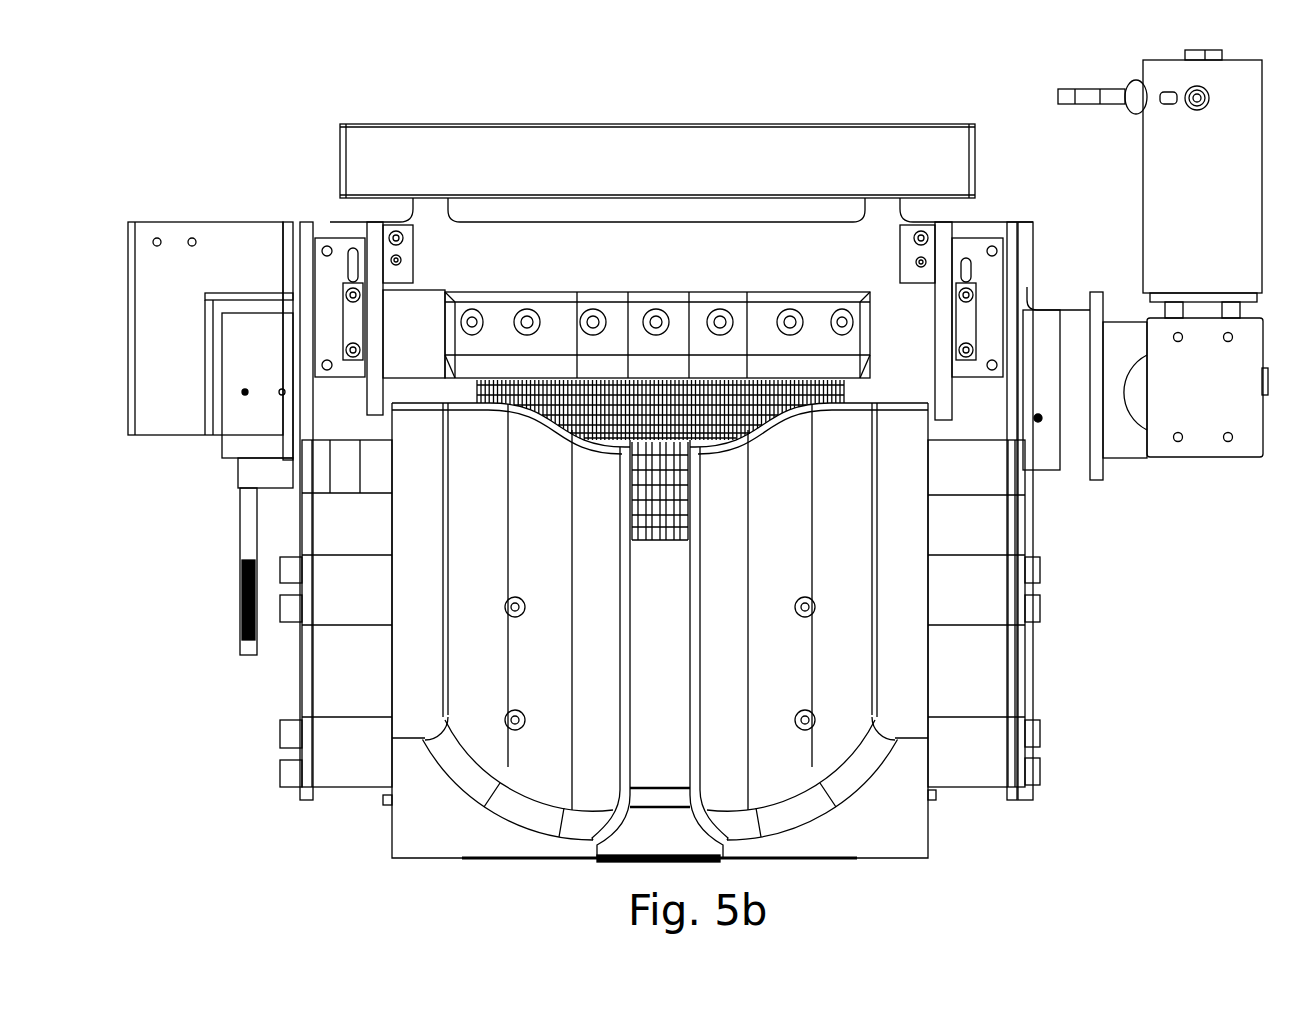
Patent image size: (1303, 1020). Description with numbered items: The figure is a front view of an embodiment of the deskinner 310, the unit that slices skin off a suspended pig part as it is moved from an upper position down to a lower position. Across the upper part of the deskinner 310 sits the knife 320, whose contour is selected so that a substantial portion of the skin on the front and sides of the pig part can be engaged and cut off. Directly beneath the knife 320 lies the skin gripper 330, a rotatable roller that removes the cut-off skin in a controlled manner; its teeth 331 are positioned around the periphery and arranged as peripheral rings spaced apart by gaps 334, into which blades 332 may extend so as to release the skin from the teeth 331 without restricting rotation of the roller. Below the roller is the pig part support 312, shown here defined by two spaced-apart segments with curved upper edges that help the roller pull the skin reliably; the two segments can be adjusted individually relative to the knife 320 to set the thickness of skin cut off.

The deskinner 310 is at (667, 110).
The pig part support 312 is at (802, 565).
The knife 320 is at (661, 383).
The skin gripper 330 is at (812, 404).
The teeth 331 is at (756, 383).
The blades 332 is at (657, 545).
The gaps 334 is at (530, 390).